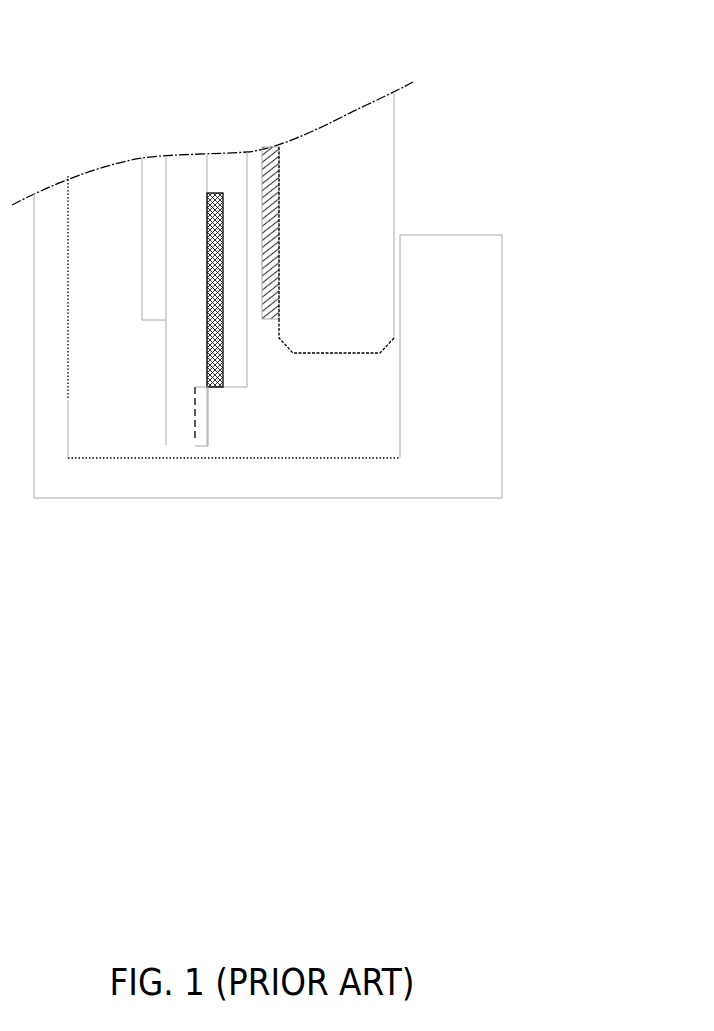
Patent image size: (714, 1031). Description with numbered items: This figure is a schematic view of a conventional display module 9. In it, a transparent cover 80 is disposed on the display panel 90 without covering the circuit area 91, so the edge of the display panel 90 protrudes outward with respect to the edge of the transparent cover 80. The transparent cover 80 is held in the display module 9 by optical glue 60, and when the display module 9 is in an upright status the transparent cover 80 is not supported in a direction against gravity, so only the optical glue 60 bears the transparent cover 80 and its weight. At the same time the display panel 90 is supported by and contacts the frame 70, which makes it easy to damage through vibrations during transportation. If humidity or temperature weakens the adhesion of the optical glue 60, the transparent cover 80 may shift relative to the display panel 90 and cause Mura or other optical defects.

The display module 9 is at (36, 27).
The optical glue 60 is at (281, 160).
The frame 70 is at (439, 485).
The transparent cover 80 is at (383, 128).
The display panel 90 is at (247, 145).
The circuit area 91 is at (208, 413).